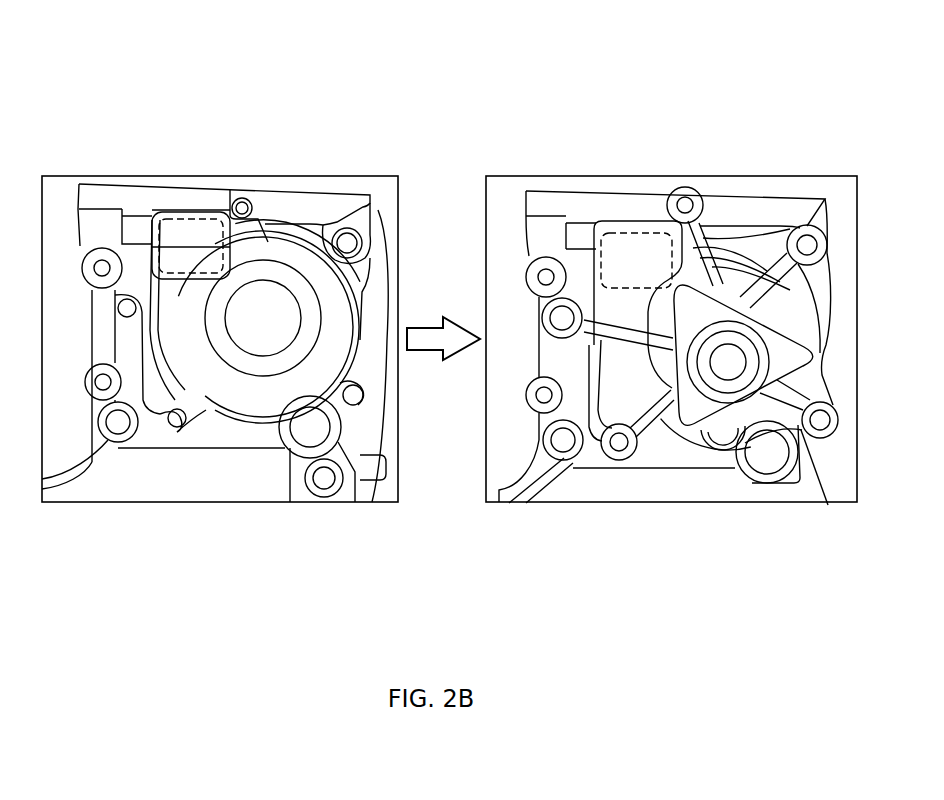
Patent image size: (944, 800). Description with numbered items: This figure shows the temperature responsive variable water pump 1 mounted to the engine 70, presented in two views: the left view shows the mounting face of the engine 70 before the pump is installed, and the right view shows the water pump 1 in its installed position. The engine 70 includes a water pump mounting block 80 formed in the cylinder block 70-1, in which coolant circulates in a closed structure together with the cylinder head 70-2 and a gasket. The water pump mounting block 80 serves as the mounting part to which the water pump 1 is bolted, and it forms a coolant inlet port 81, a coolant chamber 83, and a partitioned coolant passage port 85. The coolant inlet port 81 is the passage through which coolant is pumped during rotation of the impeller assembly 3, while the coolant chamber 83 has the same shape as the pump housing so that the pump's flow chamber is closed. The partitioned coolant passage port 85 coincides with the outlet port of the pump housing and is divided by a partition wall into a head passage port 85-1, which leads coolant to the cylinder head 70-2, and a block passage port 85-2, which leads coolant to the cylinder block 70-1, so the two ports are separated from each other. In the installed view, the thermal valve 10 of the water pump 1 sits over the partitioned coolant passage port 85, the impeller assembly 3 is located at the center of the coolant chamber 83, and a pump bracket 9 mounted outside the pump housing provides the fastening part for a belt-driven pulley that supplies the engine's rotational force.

The water pump 1 is at (797, 234).
The impeller assembly 3 is at (727, 362).
The pump bracket 9 is at (770, 383).
The thermal valve 10 is at (643, 233).
The engine 70 is at (440, 410).
The cylinder block 70-1 is at (275, 588).
The cylinder head 70-2 is at (271, 477).
The water pump mounting block 80 is at (246, 225).
The coolant inlet port 81 is at (262, 312).
The coolant chamber 83 is at (332, 305).
The partitioned coolant passage port 85 is at (376, 231).
The head passage port 85-1 is at (185, 250).
The block passage port 85-2 is at (150, 216).